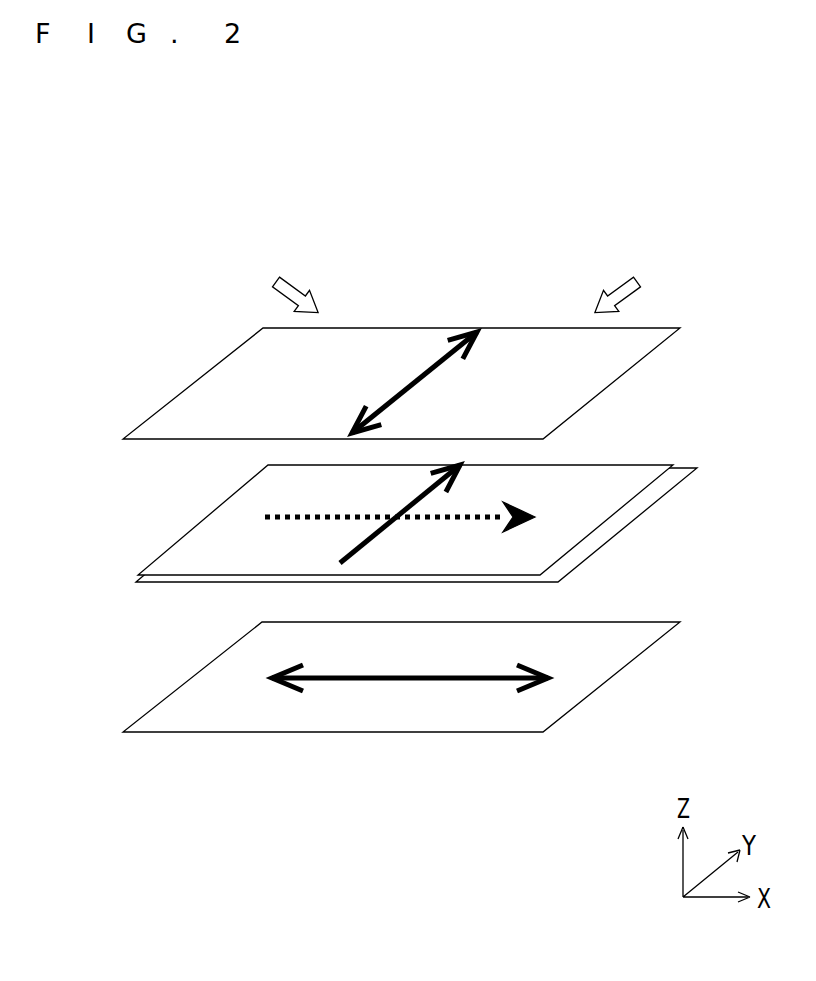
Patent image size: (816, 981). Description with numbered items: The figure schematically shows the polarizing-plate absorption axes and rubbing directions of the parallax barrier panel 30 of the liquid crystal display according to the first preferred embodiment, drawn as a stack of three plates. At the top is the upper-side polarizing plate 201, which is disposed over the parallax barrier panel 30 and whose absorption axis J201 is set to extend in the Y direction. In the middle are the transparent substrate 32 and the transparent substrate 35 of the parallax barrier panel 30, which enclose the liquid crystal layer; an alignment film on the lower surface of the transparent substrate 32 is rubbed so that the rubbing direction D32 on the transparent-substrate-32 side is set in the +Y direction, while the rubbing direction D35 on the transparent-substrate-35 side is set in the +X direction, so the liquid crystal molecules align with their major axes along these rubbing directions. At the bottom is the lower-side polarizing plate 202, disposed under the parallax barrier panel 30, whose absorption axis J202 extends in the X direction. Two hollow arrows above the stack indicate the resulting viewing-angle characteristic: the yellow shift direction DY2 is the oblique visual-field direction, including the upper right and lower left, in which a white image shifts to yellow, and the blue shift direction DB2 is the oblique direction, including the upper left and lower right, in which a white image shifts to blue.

The parallax barrier panel 30 is at (565, 238).
The upper-side polarizing plate 201 is at (611, 388).
The lower-side polarizing plate 202 is at (612, 679).
The transparent substrate 32 is at (654, 465).
The transparent substrate 35 is at (661, 493).
The absorption axis J201 is at (413, 386).
The absorption axis J202 is at (413, 677).
The rubbing direction D32 is at (420, 499).
The rubbing direction D35 is at (425, 522).
The blue shift direction DB2 is at (282, 300).
The yellow shift direction DY2 is at (628, 301).